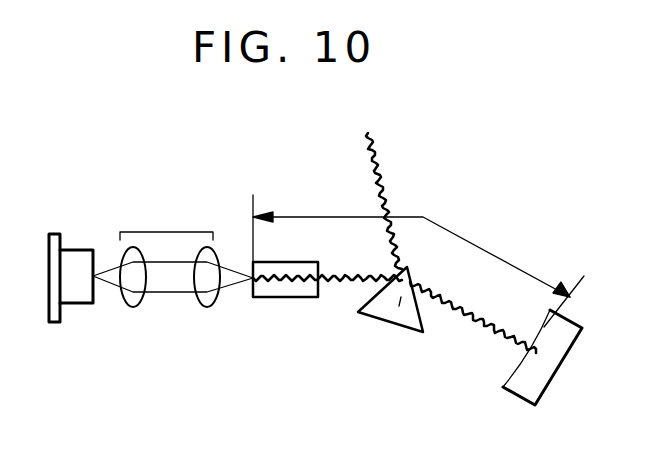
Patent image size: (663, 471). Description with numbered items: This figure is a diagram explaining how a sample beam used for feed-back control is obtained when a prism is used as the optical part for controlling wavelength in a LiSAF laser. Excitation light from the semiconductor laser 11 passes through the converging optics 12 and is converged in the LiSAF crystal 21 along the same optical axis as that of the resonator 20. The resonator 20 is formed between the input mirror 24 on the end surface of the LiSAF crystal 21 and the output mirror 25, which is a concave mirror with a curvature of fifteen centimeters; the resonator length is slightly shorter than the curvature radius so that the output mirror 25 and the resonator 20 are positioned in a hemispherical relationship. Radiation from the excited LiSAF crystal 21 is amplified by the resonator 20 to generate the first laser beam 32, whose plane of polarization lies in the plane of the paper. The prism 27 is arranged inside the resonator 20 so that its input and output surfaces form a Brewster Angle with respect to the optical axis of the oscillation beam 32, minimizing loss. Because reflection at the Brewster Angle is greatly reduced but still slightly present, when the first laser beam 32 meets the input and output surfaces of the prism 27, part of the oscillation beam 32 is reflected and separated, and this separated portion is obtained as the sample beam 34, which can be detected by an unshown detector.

The semiconductor laser 11 is at (80, 250).
The converging optics 12 is at (156, 232).
The resonator 20 is at (438, 226).
The LiSAF crystal 21 is at (272, 262).
The input mirror 24 is at (252, 296).
The output mirror 25 is at (523, 387).
The prism 27 is at (400, 322).
The first laser beam 32 is at (345, 283).
The sample beam 34 is at (384, 160).